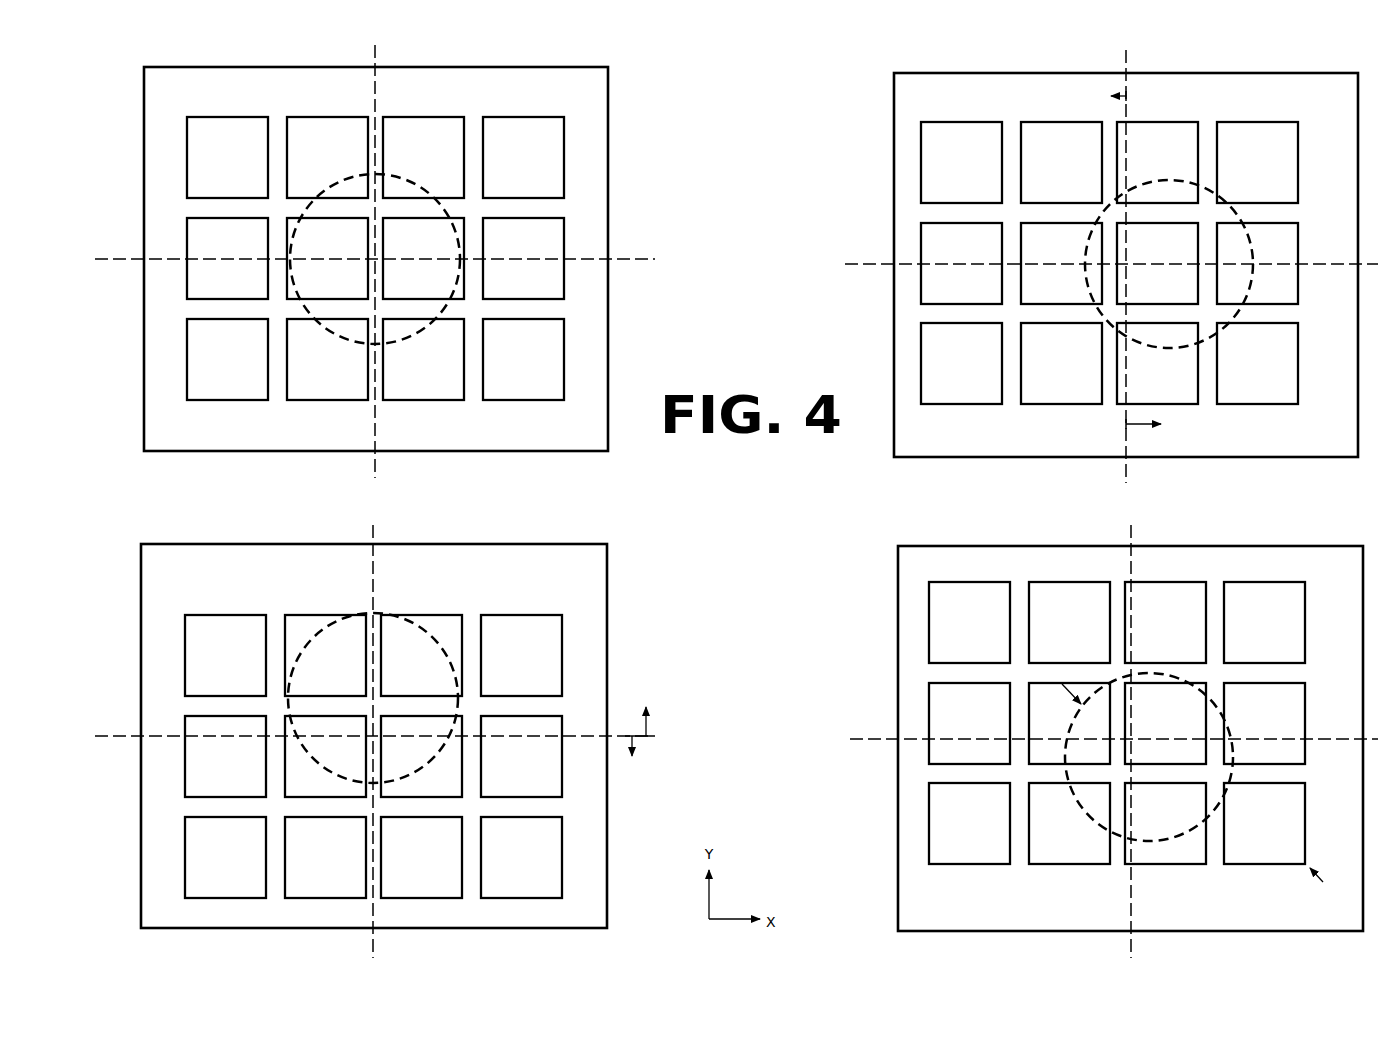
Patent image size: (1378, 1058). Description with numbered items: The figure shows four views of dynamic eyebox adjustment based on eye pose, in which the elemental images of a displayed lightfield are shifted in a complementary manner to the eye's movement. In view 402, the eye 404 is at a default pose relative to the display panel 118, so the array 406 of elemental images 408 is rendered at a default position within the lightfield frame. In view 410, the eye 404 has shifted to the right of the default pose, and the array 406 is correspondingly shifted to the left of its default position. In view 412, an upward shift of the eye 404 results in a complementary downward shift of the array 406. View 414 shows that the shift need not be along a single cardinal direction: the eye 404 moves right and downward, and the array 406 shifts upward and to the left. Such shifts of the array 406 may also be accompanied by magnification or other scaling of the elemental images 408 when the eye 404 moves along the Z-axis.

The display panel 118 is at (609, 215).
The view 402 is at (622, 84).
The eye 404 is at (405, 178).
The array of elemental images 406 is at (515, 106).
The elemental image 408 is at (565, 158).
The view 410 is at (877, 84).
The view 412 is at (622, 555).
The view 414 is at (878, 564).